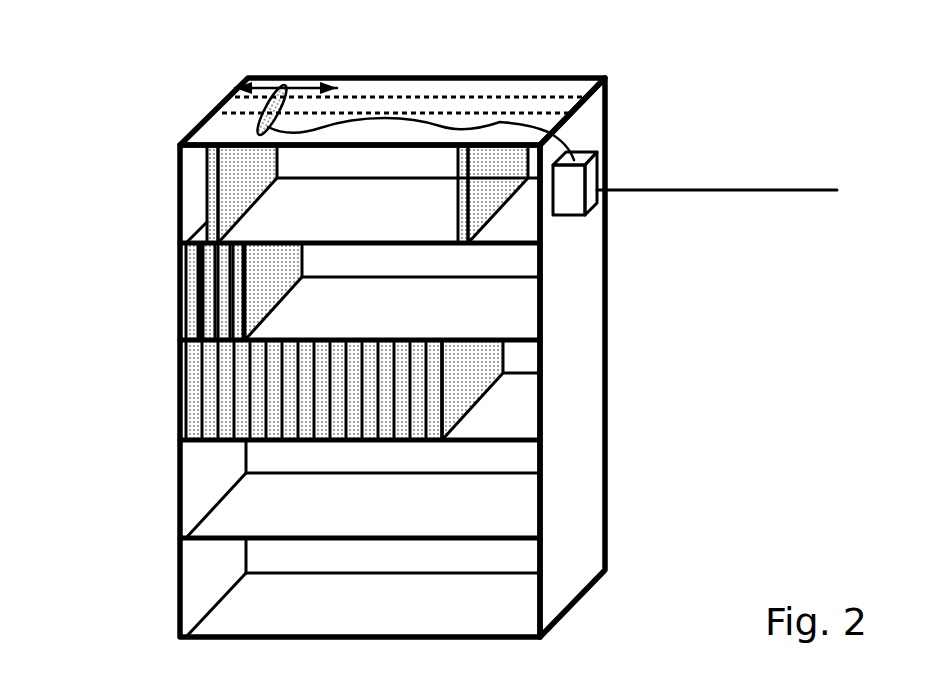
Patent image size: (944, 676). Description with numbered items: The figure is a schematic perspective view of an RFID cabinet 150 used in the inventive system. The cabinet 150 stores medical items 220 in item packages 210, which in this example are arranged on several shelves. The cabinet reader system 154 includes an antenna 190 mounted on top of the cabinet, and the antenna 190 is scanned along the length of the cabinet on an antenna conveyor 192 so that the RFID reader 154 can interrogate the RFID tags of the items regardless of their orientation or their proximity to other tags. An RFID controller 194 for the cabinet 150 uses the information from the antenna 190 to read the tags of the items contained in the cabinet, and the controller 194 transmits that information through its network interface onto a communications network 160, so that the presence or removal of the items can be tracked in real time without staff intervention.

The RFID cabinet 150 is at (625, 388).
The RFID reader 154 is at (633, 117).
The communications network 160 is at (745, 191).
The antenna 190 is at (238, 88).
The antenna conveyor 192 is at (495, 97).
The RFID controller 194 is at (597, 168).
The item package 210 is at (127, 291).
The medical item 220 is at (195, 310).